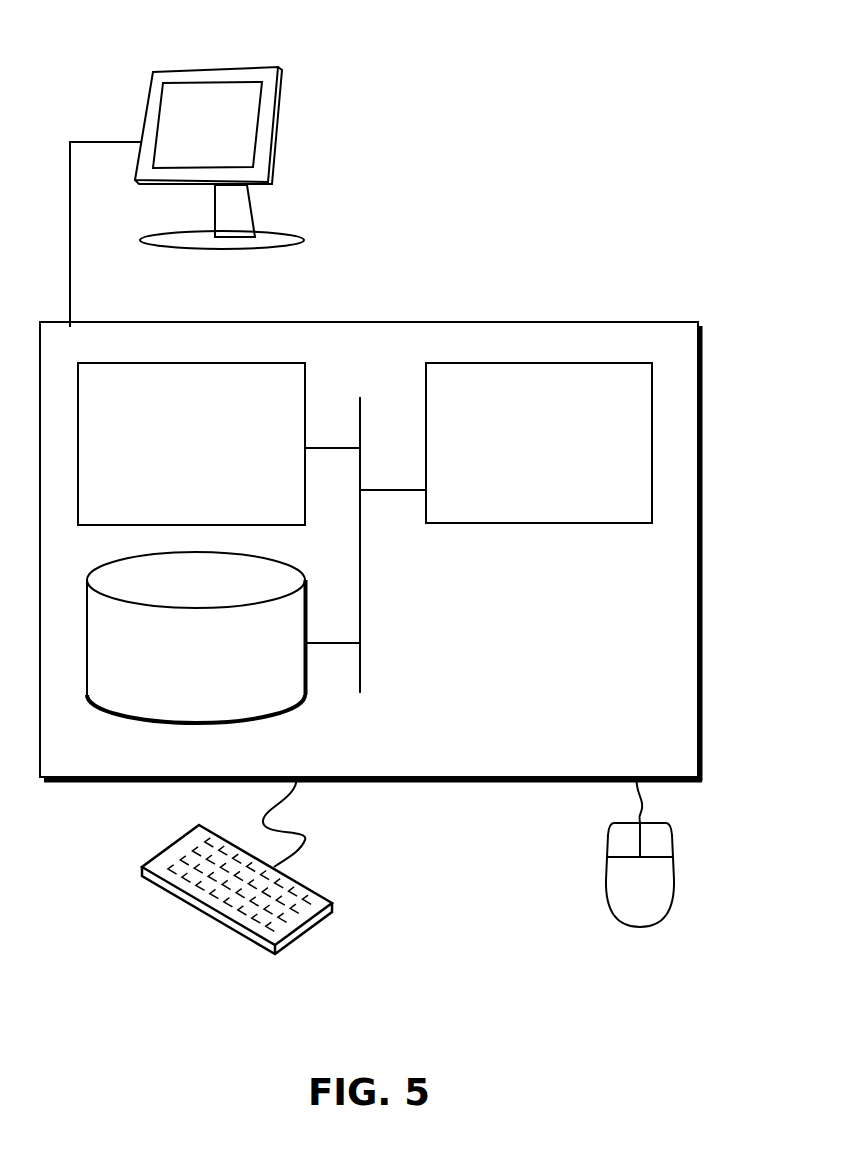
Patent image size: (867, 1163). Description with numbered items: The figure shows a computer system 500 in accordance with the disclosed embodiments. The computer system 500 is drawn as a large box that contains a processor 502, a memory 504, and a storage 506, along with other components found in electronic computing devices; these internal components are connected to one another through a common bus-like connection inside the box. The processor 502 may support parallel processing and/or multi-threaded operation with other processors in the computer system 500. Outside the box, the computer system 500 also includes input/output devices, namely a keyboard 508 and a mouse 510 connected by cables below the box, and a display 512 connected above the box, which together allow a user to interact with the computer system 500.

The computer system 500 is at (415, 300).
The processor 502 is at (521, 456).
The memory 504 is at (171, 456).
The storage 506 is at (177, 667).
The keyboard 508 is at (162, 888).
The mouse 510 is at (619, 898).
The display 512 is at (187, 197).